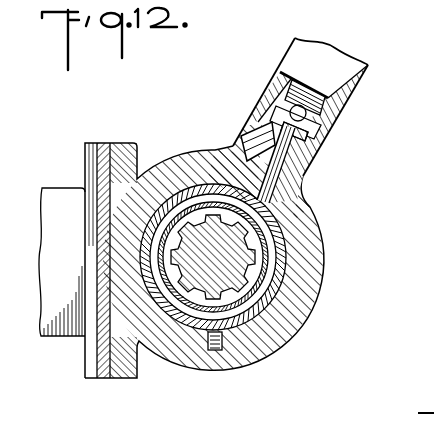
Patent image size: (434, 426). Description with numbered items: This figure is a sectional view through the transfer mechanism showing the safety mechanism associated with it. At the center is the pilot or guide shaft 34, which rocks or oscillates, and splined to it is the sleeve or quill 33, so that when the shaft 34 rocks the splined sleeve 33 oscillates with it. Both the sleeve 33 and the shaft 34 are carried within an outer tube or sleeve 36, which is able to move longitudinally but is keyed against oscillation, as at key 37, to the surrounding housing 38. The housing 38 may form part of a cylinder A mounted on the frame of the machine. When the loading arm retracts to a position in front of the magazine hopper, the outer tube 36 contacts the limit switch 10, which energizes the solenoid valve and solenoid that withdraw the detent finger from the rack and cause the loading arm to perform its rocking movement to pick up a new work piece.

The limit switch LS10 10 is at (315, 92).
The sleeve or quill 33 is at (258, 256).
The pilot or guide shaft 34 is at (258, 291).
The outer tube or sleeve 36 is at (309, 232).
The key 37 is at (218, 350).
The housing 38 is at (301, 320).
The cylinder A is at (66, 273).